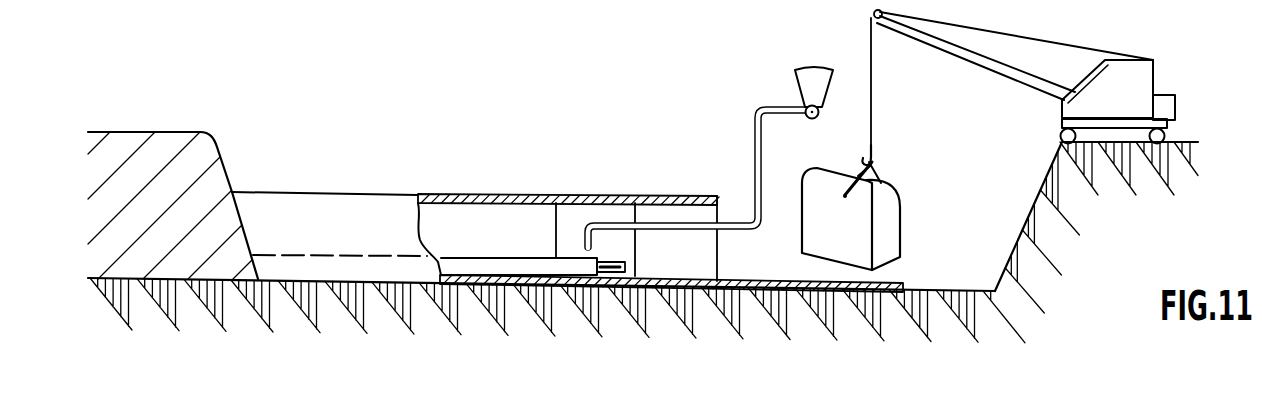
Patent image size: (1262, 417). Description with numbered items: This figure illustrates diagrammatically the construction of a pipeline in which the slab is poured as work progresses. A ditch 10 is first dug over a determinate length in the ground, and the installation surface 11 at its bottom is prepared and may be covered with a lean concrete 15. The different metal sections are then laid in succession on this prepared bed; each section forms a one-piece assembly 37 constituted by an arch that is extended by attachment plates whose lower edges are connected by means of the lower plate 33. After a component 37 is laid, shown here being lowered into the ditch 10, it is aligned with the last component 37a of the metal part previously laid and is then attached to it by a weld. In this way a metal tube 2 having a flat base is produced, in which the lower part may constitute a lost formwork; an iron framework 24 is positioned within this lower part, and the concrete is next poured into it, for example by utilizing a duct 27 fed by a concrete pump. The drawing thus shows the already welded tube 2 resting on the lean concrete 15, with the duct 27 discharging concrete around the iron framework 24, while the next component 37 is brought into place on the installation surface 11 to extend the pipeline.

The pipe 2 is at (507, 258).
The iron framework 24 is at (612, 263).
The duct 27 is at (754, 156).
The last component of the metal part previously laid 37a is at (672, 194).
The one-piece assembly 37 is at (908, 203).
The lower plate 33 is at (892, 269).
The lean concrete 15 is at (903, 289).
The ditch 10 is at (1010, 202).
The installation surface 11 is at (920, 292).